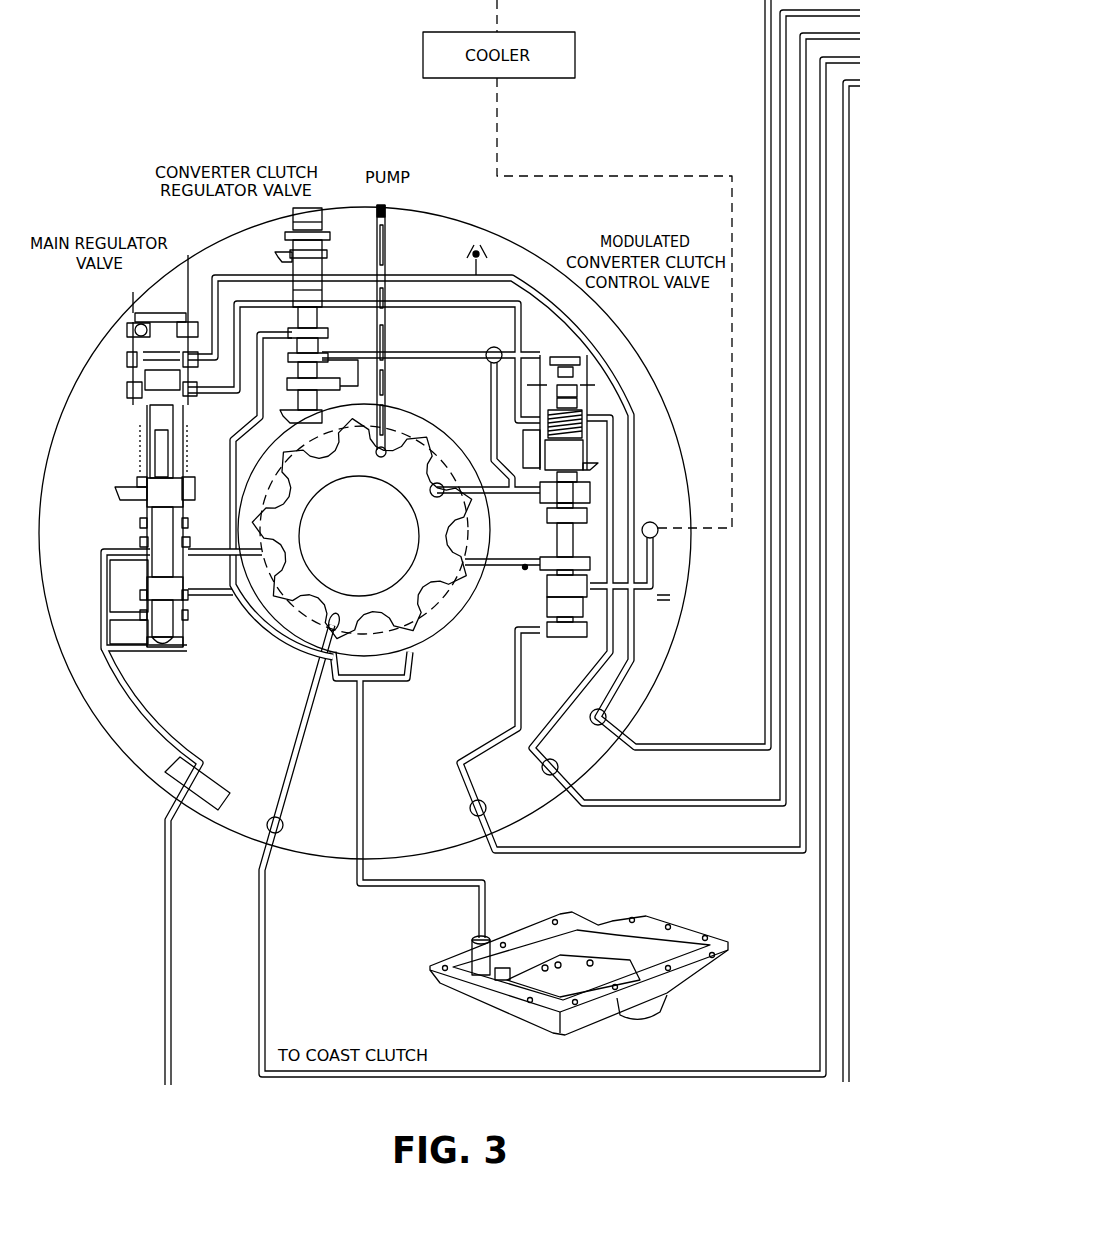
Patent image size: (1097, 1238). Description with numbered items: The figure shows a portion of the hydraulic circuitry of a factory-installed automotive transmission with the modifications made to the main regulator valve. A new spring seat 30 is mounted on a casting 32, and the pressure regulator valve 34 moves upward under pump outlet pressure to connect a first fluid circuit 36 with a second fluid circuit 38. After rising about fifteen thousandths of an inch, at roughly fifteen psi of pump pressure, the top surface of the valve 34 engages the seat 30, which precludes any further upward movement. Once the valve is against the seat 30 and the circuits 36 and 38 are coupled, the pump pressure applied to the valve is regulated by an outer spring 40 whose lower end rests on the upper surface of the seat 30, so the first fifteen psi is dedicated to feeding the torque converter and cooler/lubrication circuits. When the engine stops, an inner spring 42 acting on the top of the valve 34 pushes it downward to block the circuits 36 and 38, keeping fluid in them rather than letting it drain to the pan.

The spring seat 30 is at (131, 479).
The casting 32 is at (197, 480).
The pressure regulator valve 34 is at (150, 507).
The first fluid circuit 36 is at (217, 558).
The second fluid circuit 38 is at (225, 447).
The outer spring 40 is at (131, 450).
The inner spring 42 is at (150, 425).